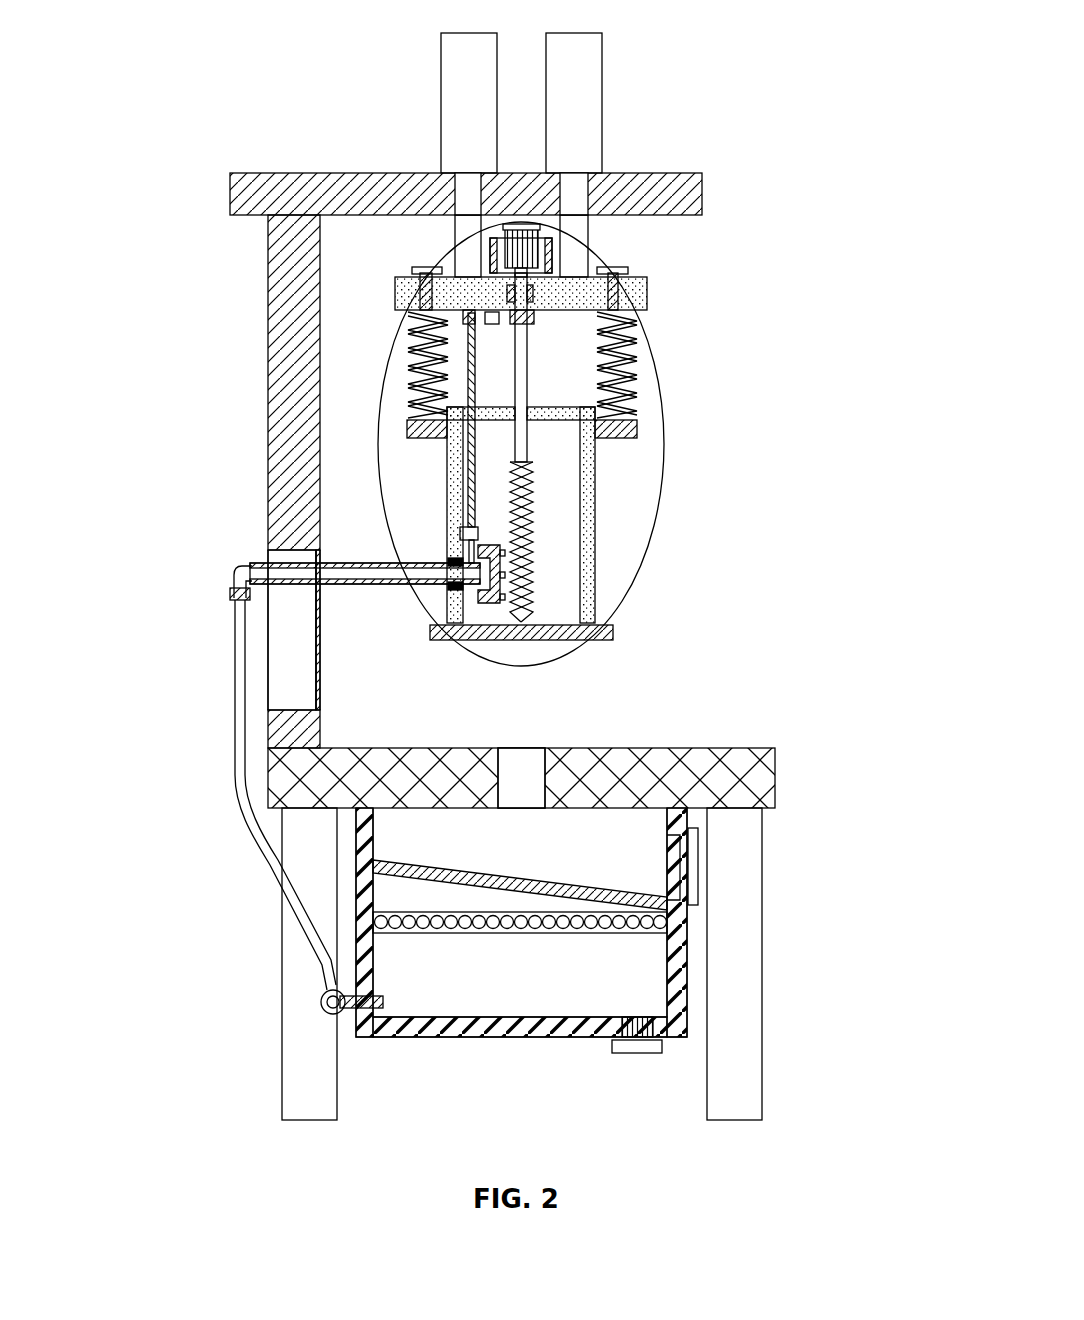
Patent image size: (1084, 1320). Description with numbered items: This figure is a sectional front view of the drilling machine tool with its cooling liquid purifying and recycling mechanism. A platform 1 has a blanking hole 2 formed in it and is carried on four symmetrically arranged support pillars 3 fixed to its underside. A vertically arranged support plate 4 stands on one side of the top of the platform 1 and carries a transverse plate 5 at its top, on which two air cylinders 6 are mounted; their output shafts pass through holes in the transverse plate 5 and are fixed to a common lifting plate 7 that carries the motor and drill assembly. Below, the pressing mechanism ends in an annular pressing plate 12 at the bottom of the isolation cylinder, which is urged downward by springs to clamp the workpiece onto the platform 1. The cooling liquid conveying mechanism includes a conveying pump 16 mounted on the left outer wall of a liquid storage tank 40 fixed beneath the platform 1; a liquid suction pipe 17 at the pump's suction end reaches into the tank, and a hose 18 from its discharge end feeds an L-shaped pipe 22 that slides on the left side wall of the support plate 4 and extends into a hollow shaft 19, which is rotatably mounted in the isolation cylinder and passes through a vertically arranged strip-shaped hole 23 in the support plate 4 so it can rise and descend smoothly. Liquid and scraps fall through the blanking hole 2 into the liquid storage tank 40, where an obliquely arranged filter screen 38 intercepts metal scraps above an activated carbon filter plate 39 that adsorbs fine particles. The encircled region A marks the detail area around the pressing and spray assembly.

The platform 1 is at (775, 749).
The blanking hole 2 is at (522, 762).
The support pillars 3 is at (738, 1050).
The support plate 4 is at (268, 380).
The transverse plate 5 is at (330, 172).
The air cylinders 6 is at (467, 95).
The lifting plate 7 is at (647, 288).
The annular pressing plate 12 is at (613, 628).
The conveying pump 16 is at (317, 1008).
The liquid suction pipe 17 is at (383, 1005).
The hose 18 is at (242, 790).
The hollow shaft 19 is at (370, 563).
The L-shaped pipe 22 is at (238, 578).
The strip-shaped hole 23 is at (290, 643).
The filter screen 38 is at (560, 890).
The activated carbon filter plate 39 is at (473, 935).
The liquid storage tank 40 is at (688, 958).
The enlarged detail region A is at (665, 438).